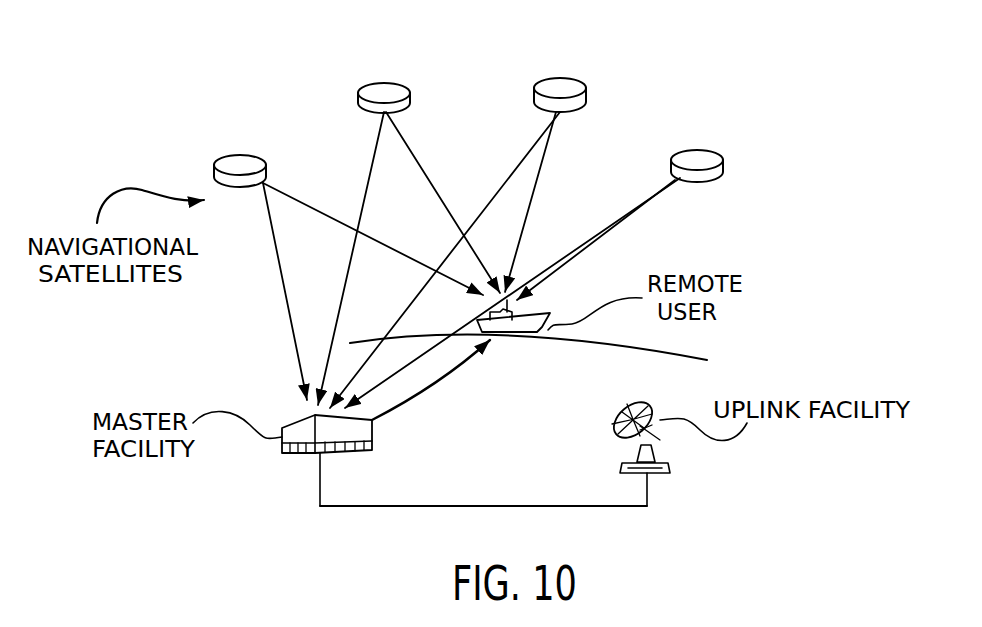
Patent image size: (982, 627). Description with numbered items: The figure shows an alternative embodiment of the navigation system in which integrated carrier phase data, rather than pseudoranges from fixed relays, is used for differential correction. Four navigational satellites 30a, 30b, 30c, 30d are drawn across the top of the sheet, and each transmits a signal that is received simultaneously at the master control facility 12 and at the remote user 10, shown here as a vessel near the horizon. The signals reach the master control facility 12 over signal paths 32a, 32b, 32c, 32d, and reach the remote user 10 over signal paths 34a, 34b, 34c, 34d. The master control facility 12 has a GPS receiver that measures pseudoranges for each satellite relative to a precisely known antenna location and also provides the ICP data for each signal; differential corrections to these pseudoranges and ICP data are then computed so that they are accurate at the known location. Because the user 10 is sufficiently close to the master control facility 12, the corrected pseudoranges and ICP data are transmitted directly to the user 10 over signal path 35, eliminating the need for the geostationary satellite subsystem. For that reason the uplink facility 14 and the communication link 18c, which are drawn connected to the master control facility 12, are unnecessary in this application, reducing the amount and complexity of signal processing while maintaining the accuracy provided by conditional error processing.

The remote user 10 is at (507, 327).
The master control facility 12 is at (345, 455).
The uplink facility 14 is at (668, 467).
The communication link 18c is at (500, 507).
The navigational satellite 30a is at (240, 163).
The navigational satellite 30b is at (393, 90).
The navigational satellite 30c is at (562, 86).
The navigational satellite 30d is at (700, 158).
The signal path 32a is at (298, 347).
The signal path 32b is at (345, 293).
The signal path 32c is at (410, 293).
The signal path 32d is at (452, 333).
The signal path 34a is at (312, 212).
The signal path 34b is at (427, 165).
The signal path 34c is at (538, 163).
The signal path 34d is at (568, 263).
The signal path 35 is at (410, 395).